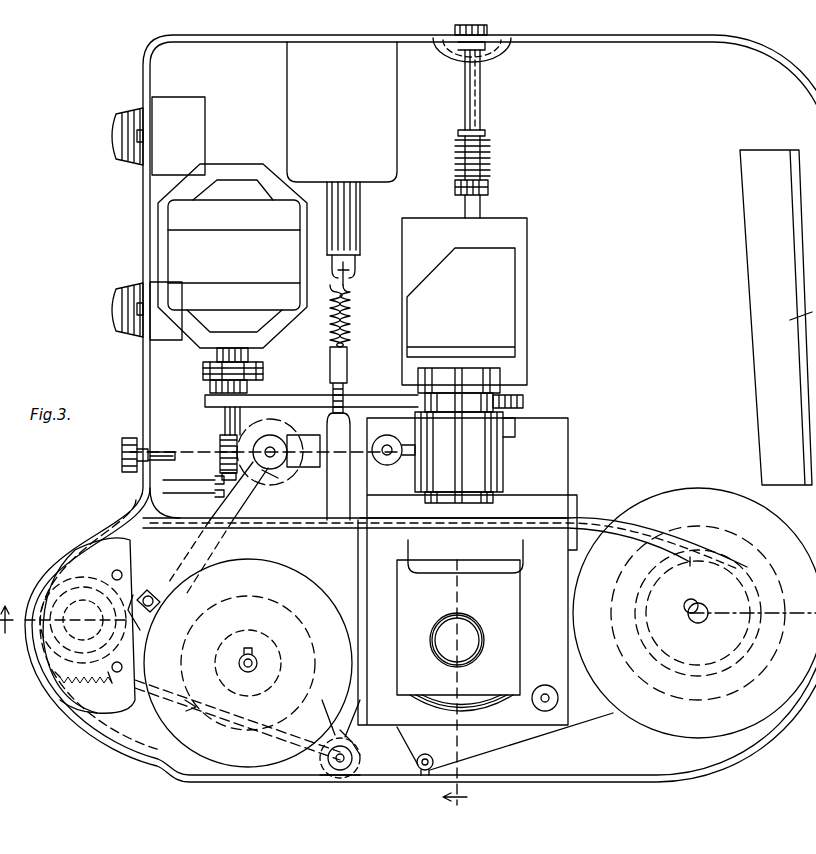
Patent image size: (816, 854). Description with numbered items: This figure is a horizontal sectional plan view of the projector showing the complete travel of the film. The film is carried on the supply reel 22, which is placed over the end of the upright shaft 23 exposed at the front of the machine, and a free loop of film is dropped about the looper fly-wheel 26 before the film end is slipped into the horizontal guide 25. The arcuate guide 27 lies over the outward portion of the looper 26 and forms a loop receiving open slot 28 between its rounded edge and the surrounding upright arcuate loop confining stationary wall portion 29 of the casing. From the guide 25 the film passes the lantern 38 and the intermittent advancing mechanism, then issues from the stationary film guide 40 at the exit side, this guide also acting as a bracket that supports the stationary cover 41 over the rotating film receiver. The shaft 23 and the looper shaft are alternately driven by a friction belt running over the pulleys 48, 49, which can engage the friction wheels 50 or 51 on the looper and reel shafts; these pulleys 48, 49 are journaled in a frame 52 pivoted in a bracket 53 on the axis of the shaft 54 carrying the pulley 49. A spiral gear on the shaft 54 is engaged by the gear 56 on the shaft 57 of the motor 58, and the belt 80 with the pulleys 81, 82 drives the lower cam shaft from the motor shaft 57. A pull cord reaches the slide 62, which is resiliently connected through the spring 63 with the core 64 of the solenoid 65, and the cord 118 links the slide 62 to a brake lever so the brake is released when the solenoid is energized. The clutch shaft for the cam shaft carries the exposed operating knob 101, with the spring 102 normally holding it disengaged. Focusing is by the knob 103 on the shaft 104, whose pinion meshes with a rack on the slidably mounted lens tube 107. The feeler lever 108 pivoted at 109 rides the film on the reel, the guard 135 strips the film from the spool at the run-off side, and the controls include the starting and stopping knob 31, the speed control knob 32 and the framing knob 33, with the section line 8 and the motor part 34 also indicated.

The section line 8- 8 is at (462, 78).
The supply reel 22 is at (320, 598).
The upright reel supporting shaft 23 is at (248, 672).
The horizontal guide 25 is at (311, 522).
The looper fly-wheel 26 is at (55, 593).
The arcuate guide 27 is at (80, 557).
The loop receiving open slot 28 is at (92, 713).
The arcuate loop confining stationary wall portion 29 is at (43, 687).
The starting and stopping knob 31 is at (126, 117).
The speed control knob 32 is at (123, 286).
The framing knob 33 is at (355, 777).
The motor 34 is at (505, 463).
The lantern 38 is at (510, 616).
The film guide 40 is at (602, 504).
The stationary cover 41 is at (748, 560).
The pulley 48 is at (200, 598).
The pulley 49 is at (271, 478).
The friction wheel 50 is at (83, 620).
The friction wheel 51 is at (268, 635).
The frame 52 is at (238, 510).
The bracket 53 is at (314, 468).
The shaft 54 is at (280, 438).
The gear 56 is at (220, 450).
The motor shaft 57 is at (226, 428).
The motor 58 is at (232, 256).
The slide 62 is at (332, 498).
The spring 63 is at (350, 307).
The core 64 is at (350, 229).
The solenoid 65 is at (391, 129).
The belt 80 is at (304, 400).
The pulley 81 is at (210, 395).
The pulley 82 is at (525, 396).
The operating knob 101 is at (509, 42).
The spring 102 is at (486, 156).
The focusing knob 103 is at (122, 455).
The shaft 104 is at (162, 460).
The lens tube 107 is at (494, 498).
The lever 108 is at (352, 742).
The pivot 109 is at (333, 765).
The cord 118 is at (515, 748).
The guard 135 is at (135, 592).